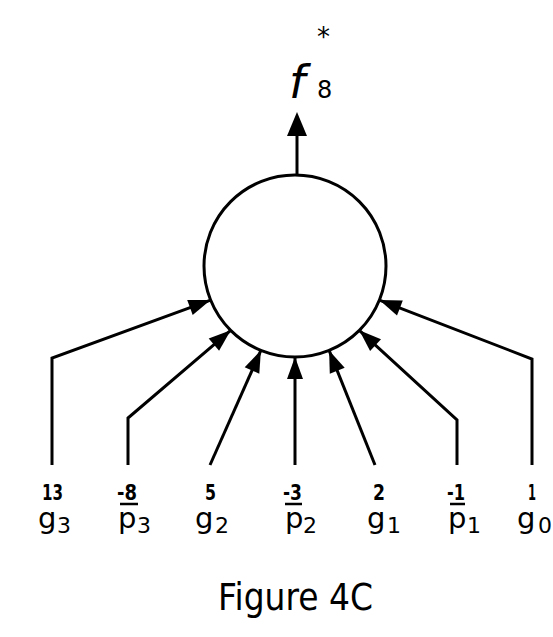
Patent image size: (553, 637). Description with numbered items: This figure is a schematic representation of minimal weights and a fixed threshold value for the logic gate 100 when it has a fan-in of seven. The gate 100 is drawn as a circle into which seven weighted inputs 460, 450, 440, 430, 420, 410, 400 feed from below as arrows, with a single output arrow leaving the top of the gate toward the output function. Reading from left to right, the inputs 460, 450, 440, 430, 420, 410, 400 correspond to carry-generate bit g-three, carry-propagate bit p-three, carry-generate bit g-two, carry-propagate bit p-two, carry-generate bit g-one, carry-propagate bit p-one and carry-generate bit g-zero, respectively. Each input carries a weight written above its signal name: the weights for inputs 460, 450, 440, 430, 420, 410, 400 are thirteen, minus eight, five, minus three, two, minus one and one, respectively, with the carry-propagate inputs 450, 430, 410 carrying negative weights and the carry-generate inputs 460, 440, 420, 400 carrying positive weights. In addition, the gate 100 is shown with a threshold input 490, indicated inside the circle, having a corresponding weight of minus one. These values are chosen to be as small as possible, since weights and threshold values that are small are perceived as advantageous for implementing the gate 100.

The logic gate 100 is at (376, 189).
The threshold input 490 is at (322, 247).
The input 400 is at (532, 370).
The input 410 is at (431, 397).
The input 420 is at (357, 425).
The input 430 is at (294, 430).
The input 440 is at (226, 421).
The input 450 is at (183, 367).
The input 460 is at (53, 378).